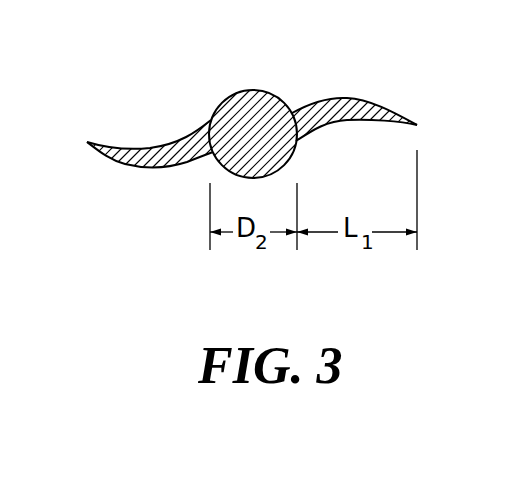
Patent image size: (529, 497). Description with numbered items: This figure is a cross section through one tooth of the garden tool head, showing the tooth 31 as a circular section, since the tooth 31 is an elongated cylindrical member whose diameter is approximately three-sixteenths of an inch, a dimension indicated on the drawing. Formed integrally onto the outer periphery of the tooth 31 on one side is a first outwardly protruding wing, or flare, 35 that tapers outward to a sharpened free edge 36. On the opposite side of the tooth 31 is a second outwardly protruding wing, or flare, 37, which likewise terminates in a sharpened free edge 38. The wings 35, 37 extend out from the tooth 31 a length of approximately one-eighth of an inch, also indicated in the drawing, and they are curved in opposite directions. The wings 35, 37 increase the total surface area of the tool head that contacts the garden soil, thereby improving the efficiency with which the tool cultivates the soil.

The tooth 31 is at (242, 102).
The first outwardly protruding wing 35 is at (123, 165).
The sharpened free edge 36 is at (87, 142).
The second outwardly protruding wing 37 is at (362, 120).
The sharpened free edge 38 is at (417, 125).